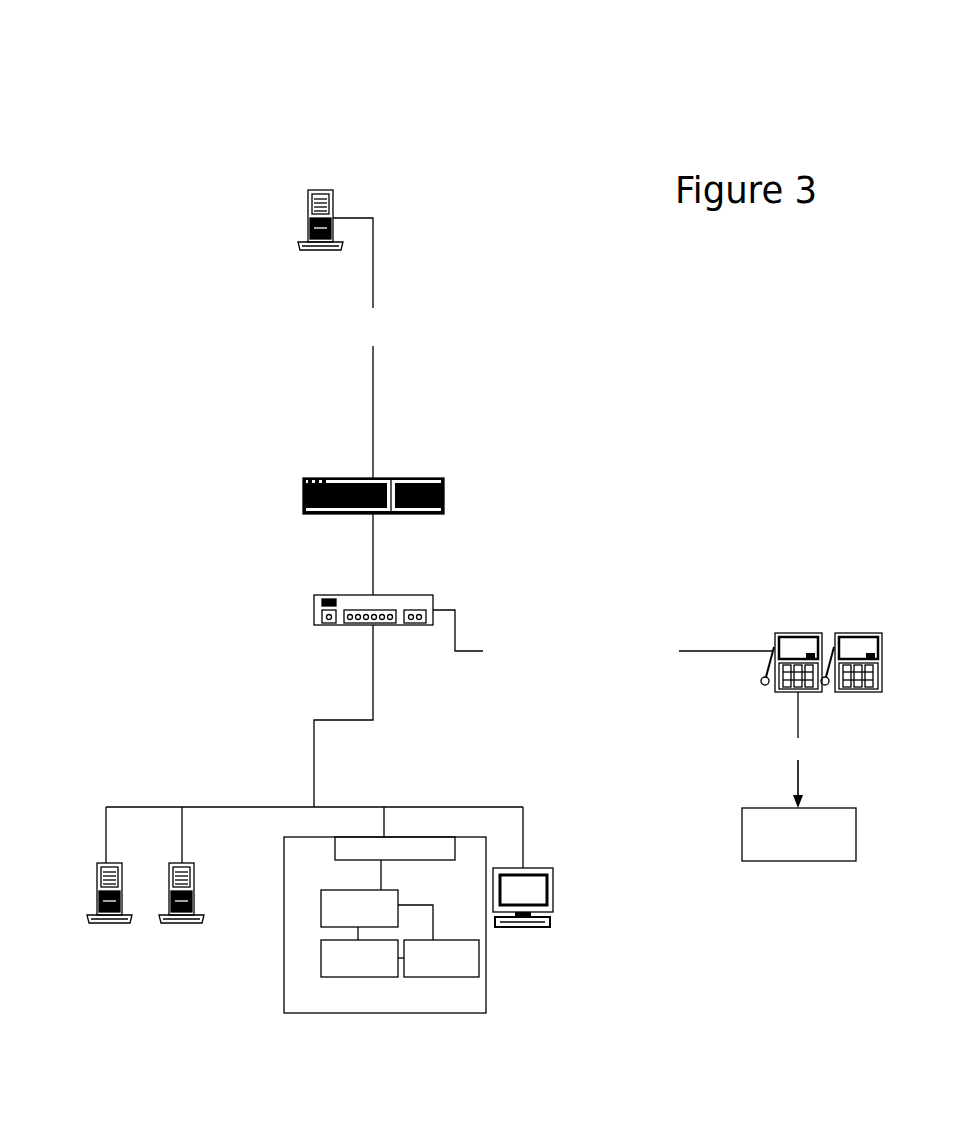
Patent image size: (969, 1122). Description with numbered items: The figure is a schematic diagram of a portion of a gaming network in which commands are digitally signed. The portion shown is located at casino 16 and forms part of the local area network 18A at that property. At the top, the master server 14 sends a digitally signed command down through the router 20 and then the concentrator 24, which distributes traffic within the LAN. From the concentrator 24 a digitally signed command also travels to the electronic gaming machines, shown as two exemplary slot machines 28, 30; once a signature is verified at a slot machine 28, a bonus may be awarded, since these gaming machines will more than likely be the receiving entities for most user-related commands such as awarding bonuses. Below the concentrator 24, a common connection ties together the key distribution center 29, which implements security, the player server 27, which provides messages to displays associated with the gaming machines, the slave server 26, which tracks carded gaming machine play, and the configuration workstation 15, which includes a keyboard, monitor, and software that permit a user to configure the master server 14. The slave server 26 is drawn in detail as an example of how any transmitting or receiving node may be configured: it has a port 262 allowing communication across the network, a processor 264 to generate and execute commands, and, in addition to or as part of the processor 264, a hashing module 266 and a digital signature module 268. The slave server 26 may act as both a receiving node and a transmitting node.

The casino 16 is at (306, 100).
The local area network 18A is at (480, 142).
The master server 14 is at (312, 192).
The router 20 is at (305, 482).
The concentrator 24 is at (316, 612).
The slot machine 28 is at (800, 633).
The slot machine 30 is at (862, 633).
The key distribution center 29 is at (97, 878).
The player server 27 is at (168, 924).
The configuration workstation 15 is at (553, 898).
The slave server 26 is at (367, 1013).
The port 262 is at (365, 837).
The processor 264 is at (321, 900).
The hashing module 266 is at (321, 953).
The digital signature module 268 is at (479, 957).